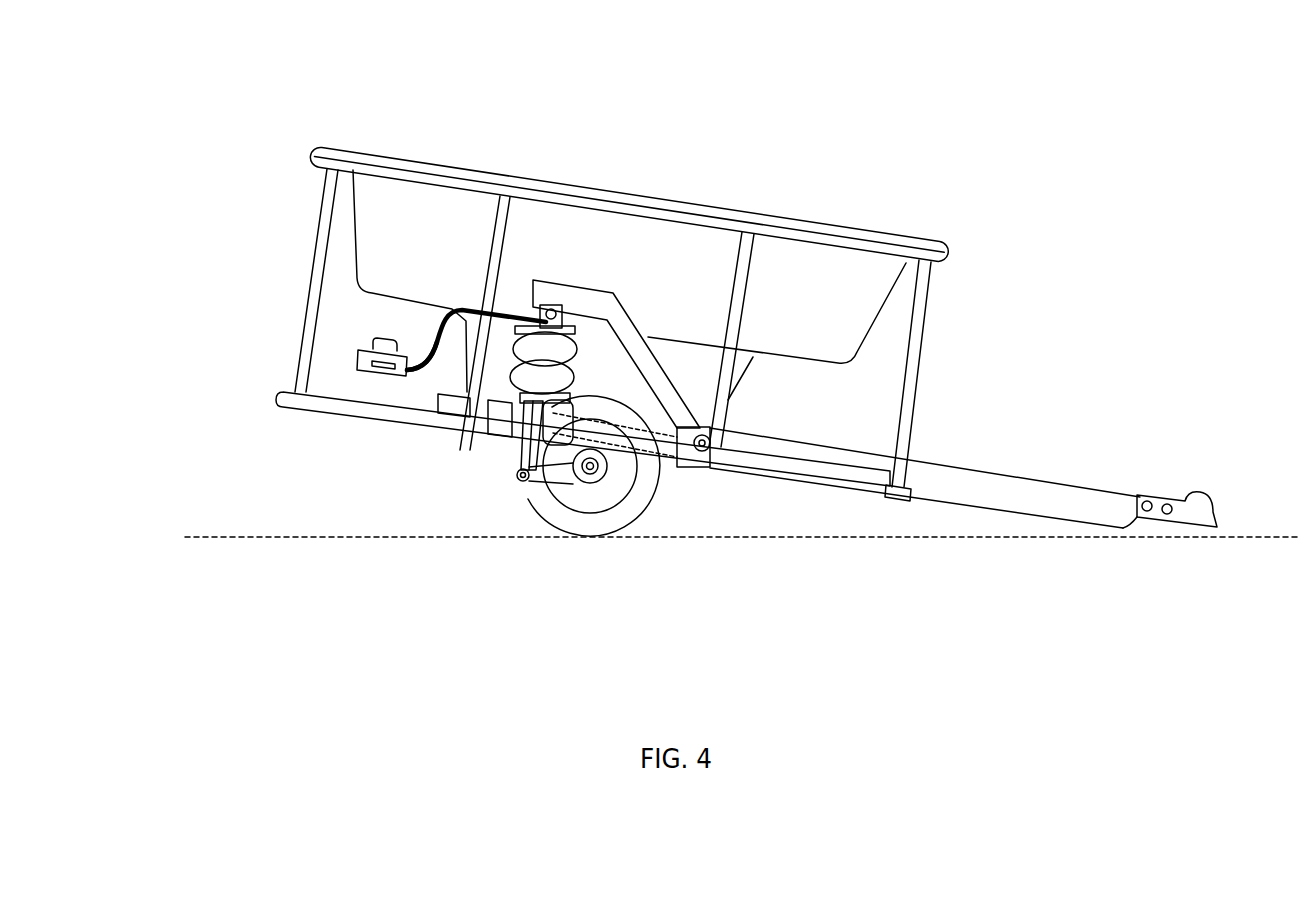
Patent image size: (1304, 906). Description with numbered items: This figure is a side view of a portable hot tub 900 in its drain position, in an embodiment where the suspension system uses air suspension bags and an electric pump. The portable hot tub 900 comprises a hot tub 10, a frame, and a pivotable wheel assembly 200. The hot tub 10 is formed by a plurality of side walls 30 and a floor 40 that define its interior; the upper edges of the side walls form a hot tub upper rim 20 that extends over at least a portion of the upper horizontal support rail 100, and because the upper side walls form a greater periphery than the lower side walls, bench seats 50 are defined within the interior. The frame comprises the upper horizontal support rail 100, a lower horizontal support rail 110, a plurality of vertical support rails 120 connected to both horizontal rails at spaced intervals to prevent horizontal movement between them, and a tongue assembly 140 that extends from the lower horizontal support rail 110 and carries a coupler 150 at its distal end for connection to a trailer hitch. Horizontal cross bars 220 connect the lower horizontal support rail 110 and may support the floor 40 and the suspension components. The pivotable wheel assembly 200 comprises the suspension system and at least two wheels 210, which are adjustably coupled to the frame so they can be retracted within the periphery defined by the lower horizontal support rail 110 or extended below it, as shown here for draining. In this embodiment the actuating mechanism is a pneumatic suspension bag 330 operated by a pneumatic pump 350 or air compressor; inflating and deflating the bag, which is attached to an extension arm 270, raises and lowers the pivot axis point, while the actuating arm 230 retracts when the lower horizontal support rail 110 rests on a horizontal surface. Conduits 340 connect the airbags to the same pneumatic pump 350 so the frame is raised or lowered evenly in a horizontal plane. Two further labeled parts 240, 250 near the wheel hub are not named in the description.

The hot tub 10 is at (563, 232).
The hot tub upper rim 20 is at (338, 150).
The side walls 30 is at (463, 335).
The floor 40 is at (497, 404).
The bench seats 50 is at (416, 293).
The upper horizontal support rail 100 is at (318, 158).
The lower horizontal support rail 110 is at (276, 398).
The vertical support rails 120 is at (733, 362).
The tongue assembly 140 is at (1040, 498).
The coupler 150 is at (1176, 508).
The pivotable wheel assembly 200 is at (567, 572).
The wheels 210 is at (604, 529).
The horizontal cross bars 220 is at (500, 418).
The actuating arm 230 is at (527, 413).
The pivot bracket 240 is at (701, 448).
The pivot joint 250 is at (520, 483).
The extension arm 270 is at (616, 310).
The pneumatic suspension bag 330 is at (530, 345).
The conduits 340 is at (421, 373).
The pneumatic pump 350 is at (358, 374).
The portable hot tub 900 is at (1012, 110).